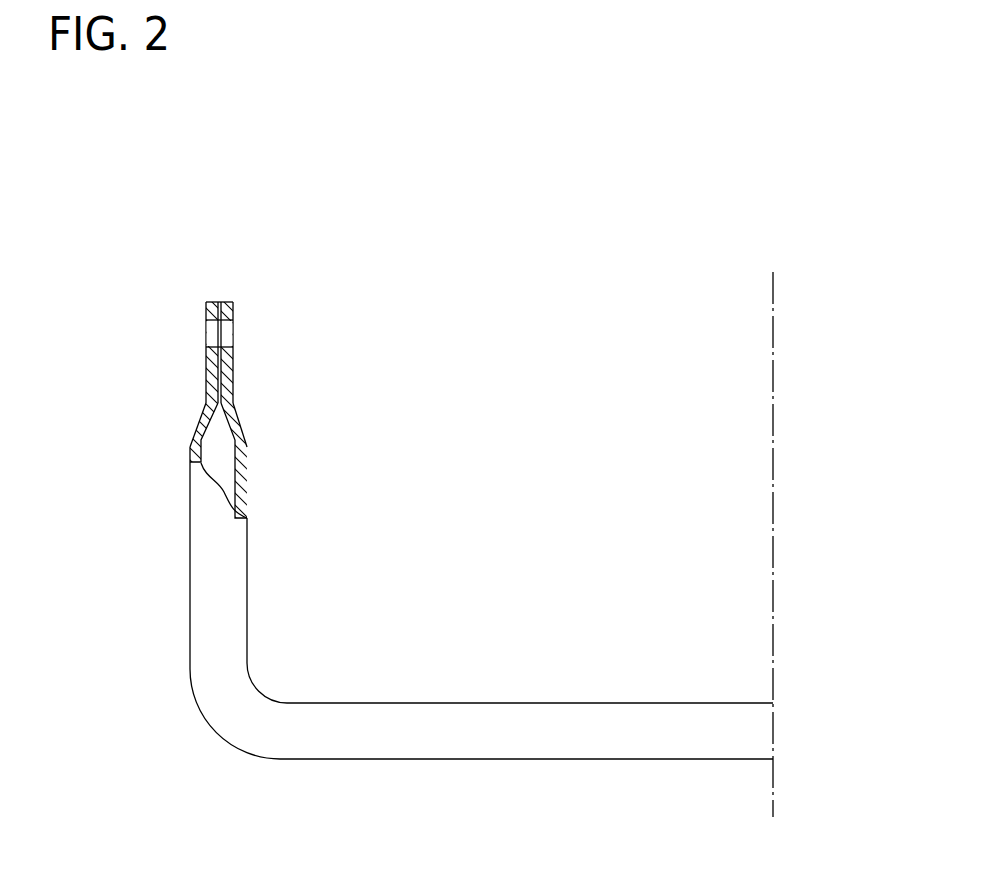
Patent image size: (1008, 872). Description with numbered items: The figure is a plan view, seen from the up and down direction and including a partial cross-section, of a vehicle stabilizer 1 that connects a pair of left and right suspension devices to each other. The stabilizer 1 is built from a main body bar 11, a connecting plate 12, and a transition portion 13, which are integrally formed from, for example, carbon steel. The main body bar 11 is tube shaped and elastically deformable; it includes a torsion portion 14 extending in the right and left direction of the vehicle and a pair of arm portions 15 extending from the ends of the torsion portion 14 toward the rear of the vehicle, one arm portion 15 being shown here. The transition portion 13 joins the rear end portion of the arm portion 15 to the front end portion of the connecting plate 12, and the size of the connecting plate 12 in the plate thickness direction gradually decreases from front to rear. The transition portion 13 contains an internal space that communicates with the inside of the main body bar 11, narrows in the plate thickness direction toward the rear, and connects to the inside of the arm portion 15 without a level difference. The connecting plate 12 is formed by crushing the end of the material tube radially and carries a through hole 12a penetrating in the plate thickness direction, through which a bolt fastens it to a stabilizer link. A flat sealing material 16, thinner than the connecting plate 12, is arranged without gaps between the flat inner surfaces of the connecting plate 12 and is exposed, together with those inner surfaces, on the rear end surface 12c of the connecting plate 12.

The stabilizer 1 is at (143, 250).
The main body bar 11 is at (560, 522).
The connecting plate 12 is at (194, 360).
The through hole 12a is at (230, 335).
The rear end surface 12c is at (213, 301).
The transition portion 13 is at (240, 418).
The torsion portion 14 is at (513, 718).
The arm portion 15 is at (238, 625).
The sealing material 16 is at (218, 385).